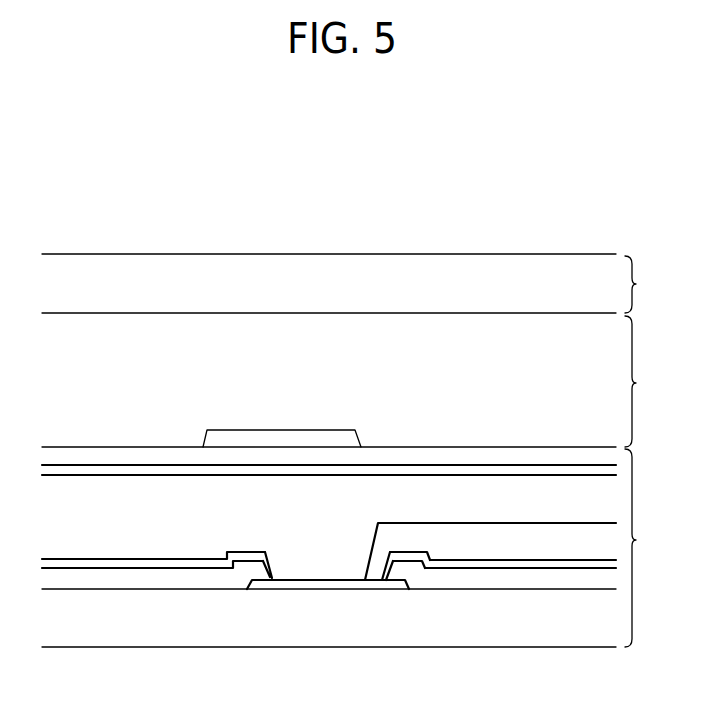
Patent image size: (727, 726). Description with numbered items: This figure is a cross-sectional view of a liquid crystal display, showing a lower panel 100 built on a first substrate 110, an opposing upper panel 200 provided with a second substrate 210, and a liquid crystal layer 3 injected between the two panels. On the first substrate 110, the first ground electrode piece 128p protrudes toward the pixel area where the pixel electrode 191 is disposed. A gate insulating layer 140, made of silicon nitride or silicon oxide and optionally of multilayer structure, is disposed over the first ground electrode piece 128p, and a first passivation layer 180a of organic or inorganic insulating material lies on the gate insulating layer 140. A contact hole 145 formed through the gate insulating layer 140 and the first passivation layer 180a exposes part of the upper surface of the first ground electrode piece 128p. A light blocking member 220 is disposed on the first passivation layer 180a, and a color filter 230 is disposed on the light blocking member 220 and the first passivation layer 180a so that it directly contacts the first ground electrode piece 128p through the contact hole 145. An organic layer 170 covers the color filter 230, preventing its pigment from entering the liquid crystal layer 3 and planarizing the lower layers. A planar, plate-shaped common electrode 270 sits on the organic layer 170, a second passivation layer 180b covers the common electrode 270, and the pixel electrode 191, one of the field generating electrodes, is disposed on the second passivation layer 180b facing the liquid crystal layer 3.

The second substrate 210 is at (337, 270).
The upper panel 200 is at (649, 284).
The liquid crystal layer 3 is at (639, 381).
The lower panel 100 is at (649, 548).
The pixel electrode 191 is at (278, 438).
The second passivation layer 180b is at (86, 457).
The common electrode 270 is at (160, 470).
The organic layer 170 is at (505, 493).
The color filter 230 is at (107, 528).
The first passivation layer 180a is at (188, 565).
The light blocking member 220 is at (463, 543).
The contact hole 145 is at (272, 571).
The first ground electrode piece 128p is at (350, 582).
The gate insulating layer 140 is at (522, 578).
The first substrate 110 is at (578, 630).